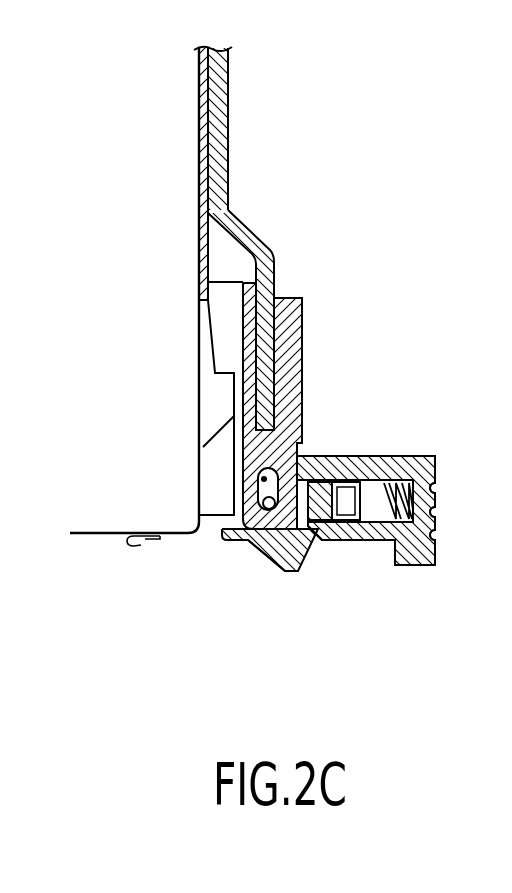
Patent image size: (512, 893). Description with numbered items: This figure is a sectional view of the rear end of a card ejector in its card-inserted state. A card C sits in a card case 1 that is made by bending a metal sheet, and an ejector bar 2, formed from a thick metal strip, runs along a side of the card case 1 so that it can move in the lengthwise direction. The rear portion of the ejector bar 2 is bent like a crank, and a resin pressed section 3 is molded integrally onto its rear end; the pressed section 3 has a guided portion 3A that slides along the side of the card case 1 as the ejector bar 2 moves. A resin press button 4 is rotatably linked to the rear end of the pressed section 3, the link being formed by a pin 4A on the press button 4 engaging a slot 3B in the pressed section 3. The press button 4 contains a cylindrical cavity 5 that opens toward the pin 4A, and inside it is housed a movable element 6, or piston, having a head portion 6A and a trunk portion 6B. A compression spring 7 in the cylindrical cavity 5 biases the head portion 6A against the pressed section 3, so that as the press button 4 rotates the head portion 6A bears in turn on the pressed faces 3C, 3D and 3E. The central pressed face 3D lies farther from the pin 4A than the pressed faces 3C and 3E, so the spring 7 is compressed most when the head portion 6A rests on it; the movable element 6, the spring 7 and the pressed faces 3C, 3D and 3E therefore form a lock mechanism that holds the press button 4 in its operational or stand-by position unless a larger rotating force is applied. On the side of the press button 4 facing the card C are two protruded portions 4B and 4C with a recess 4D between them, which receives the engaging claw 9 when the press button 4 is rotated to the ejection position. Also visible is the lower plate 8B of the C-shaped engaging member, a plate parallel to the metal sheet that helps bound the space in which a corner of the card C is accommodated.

The card case 1 is at (212, 253).
The ejector bar 2 is at (218, 100).
The card C is at (163, 199).
The pressed section 3 is at (293, 318).
The guided portion 3A is at (233, 297).
The slot 3B is at (264, 478).
The pressed face 3C is at (305, 490).
The central pressed face 3D is at (283, 553).
The pressed face 3E is at (257, 550).
The press button 4 is at (360, 463).
The pin 4A is at (265, 500).
The protruded portion 4B is at (423, 564).
The protruded portion 4C is at (302, 527).
The recess 4D is at (377, 541).
The cylindrical cavity 5 is at (388, 463).
The movable element 6 is at (375, 664).
The head portion 6A is at (313, 535).
The trunk portion 6B is at (353, 480).
The compression spring 7 is at (413, 463).
The lower plate 8B is at (205, 515).
The engaging claw 9 is at (127, 543).